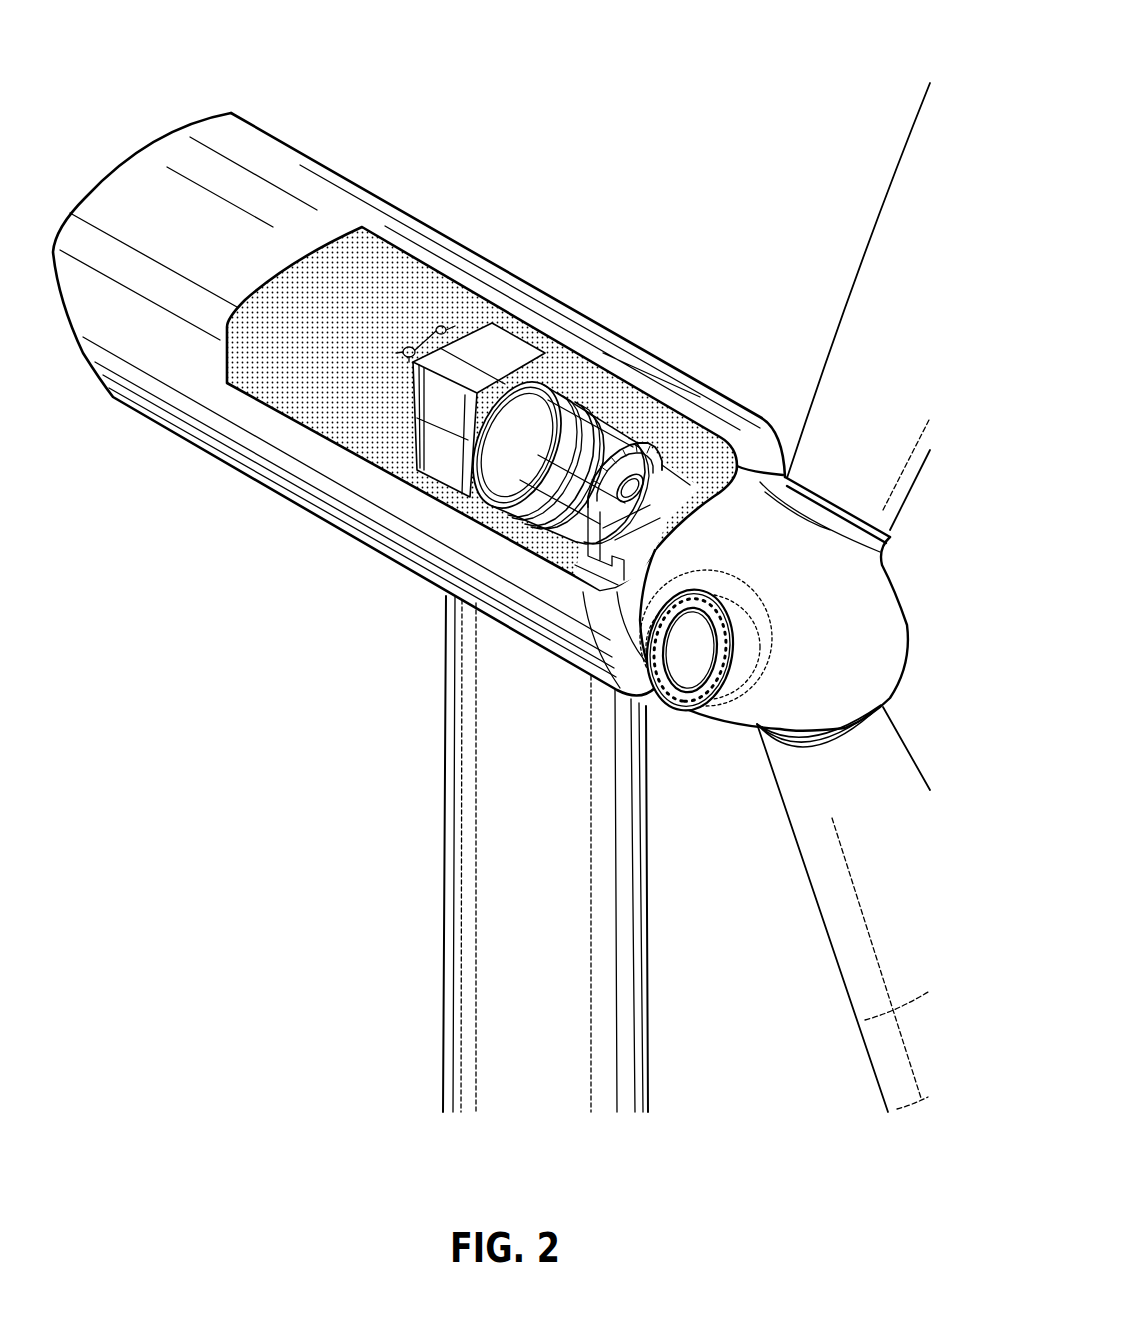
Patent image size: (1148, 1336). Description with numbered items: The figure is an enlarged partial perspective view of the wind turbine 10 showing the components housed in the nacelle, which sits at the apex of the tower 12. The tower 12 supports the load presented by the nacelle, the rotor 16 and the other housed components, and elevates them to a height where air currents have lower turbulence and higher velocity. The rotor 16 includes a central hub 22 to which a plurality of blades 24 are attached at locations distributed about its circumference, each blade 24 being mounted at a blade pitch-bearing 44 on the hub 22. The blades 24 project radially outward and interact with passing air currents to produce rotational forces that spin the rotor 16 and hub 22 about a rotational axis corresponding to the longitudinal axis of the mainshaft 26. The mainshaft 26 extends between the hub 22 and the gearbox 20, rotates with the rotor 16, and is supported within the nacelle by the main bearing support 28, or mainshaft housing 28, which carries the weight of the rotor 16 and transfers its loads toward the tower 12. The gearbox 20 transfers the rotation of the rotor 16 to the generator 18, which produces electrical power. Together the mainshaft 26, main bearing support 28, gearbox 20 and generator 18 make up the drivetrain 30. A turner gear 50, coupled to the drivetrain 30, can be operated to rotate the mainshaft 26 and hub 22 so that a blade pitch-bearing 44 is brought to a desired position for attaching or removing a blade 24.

The wind turbine 10 is at (484, 72).
The tower 12 is at (648, 1038).
The rotor 16 is at (793, 597).
The generator 18 is at (508, 340).
The gearbox 20 is at (565, 403).
The central hub 22 is at (897, 667).
The blades 24 is at (874, 230).
The mainshaft 26 is at (632, 483).
The main bearing support 28 is at (673, 490).
The drivetrain 30 is at (604, 402).
The blade pitch-bearing 44 is at (698, 700).
The turner gear 50 is at (438, 318).